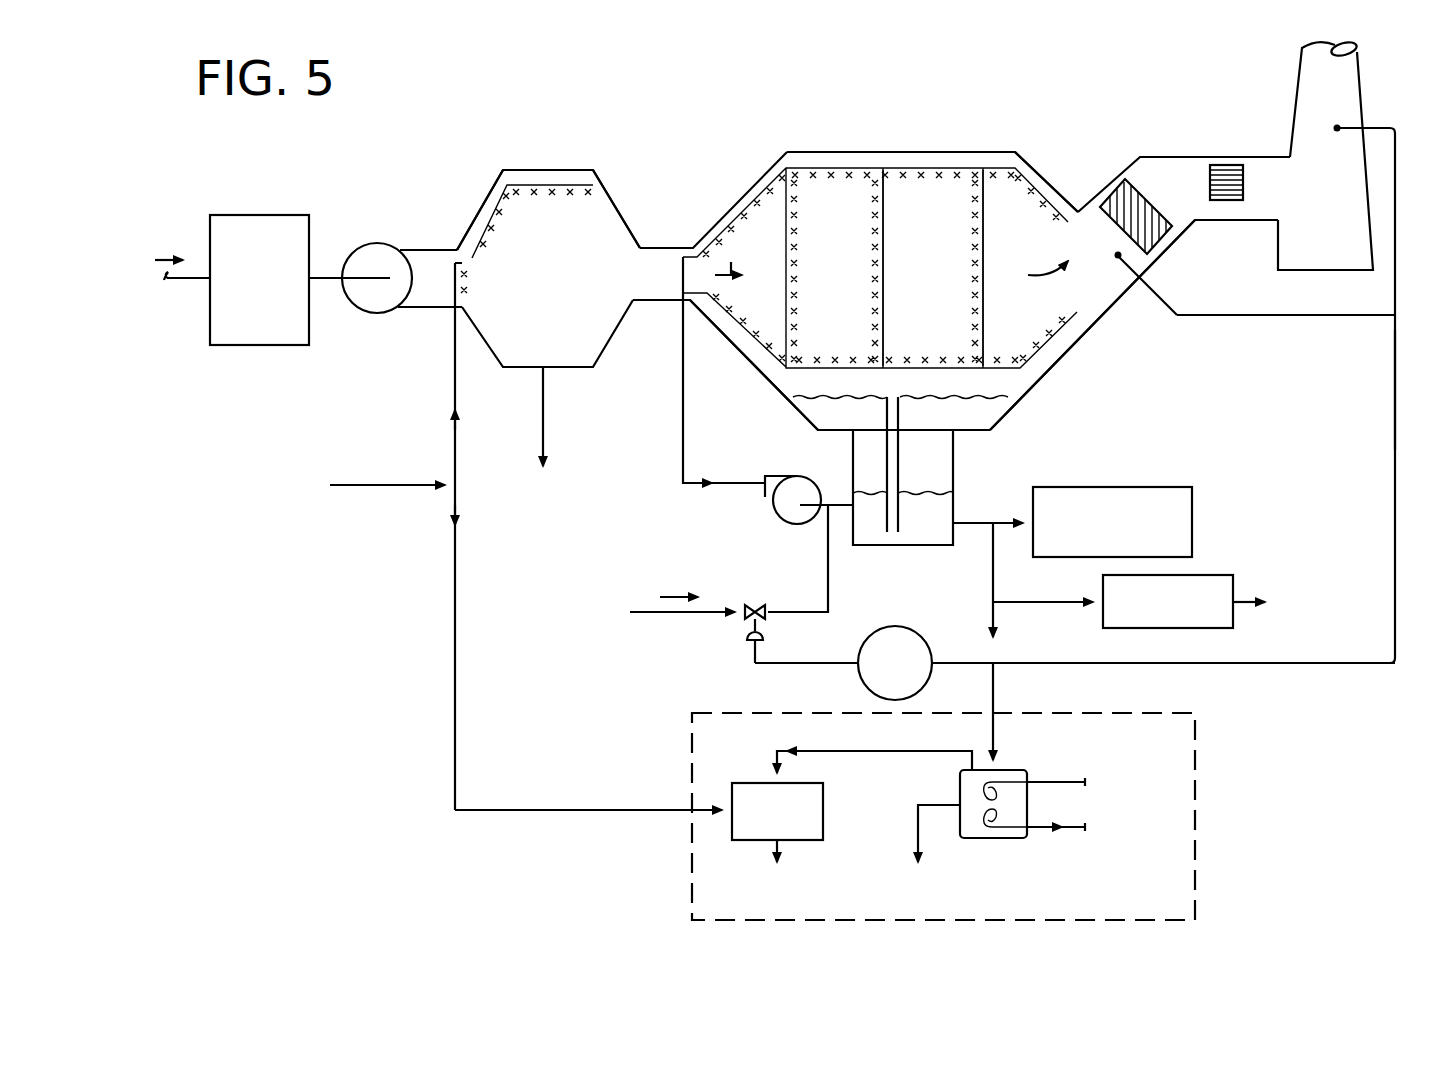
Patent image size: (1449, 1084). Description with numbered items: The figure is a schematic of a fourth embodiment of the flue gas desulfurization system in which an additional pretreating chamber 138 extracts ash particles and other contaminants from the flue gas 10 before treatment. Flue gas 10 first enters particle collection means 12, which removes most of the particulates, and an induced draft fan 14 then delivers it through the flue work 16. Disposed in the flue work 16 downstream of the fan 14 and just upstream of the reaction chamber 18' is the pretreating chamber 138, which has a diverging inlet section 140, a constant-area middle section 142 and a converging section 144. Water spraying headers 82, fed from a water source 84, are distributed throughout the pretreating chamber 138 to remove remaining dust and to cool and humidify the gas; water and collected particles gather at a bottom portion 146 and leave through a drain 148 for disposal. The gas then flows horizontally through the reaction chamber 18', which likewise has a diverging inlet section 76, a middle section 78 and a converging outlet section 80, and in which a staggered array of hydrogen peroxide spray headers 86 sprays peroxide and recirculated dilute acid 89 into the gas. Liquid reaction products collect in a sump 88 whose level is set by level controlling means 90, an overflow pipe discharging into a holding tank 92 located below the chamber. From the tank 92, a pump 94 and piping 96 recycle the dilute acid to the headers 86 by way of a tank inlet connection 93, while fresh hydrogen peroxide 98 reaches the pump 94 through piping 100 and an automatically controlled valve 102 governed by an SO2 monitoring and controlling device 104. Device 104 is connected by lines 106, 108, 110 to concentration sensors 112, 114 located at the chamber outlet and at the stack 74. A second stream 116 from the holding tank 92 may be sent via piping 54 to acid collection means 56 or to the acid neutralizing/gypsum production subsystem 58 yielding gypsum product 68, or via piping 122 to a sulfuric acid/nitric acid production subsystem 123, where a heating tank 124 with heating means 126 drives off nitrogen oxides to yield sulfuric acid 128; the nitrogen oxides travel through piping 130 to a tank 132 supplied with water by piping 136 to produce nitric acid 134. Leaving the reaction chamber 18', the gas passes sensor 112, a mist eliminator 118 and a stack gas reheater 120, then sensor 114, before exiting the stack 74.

The flue gas 10 is at (172, 258).
The particle collection means 12 is at (262, 222).
The induced draft fan 14 is at (368, 258).
The flue work 16 is at (428, 263).
The reaction chamber 18' is at (843, 139).
The piping 54 is at (1012, 522).
The acid collection means 56 is at (1130, 538).
The acid neutralizing/gypsum production subsystem 58 is at (1185, 616).
The product 68 is at (1287, 626).
The stack 74 is at (1343, 258).
The diverging inlet section 76 is at (735, 165).
The middle section 78 is at (910, 158).
The converging outlet section 80 is at (1057, 170).
The water spraying headers 82 is at (487, 240).
The water source 84 is at (389, 483).
The hydrogen peroxide spray headers 86 is at (982, 246).
The sump 88 is at (804, 419).
The dilute acid 89 is at (998, 415).
The level controlling means 90 is at (898, 405).
The holding tank 92 is at (937, 473).
The tank inlet 93 is at (841, 509).
The pump 94 is at (793, 486).
The piping 96 is at (683, 409).
The fresh hydrogen peroxide 98 is at (684, 590).
The piping 100 is at (828, 555).
The automatically controlled valve 102 is at (762, 614).
The SO2 monitoring and controlling device 104 is at (907, 637).
The line 106 is at (1395, 383).
The line 108 is at (1324, 316).
The line 110 is at (1395, 230).
The SO2 and/or NOx concentration sensor 112 is at (1116, 258).
The SO2 and/or NOx concentration sensor 114 is at (1337, 131).
The second stream 116 is at (973, 525).
The mist eliminator 118 is at (1130, 197).
The stack gas reheater 120 is at (1227, 172).
The piping 122 is at (993, 690).
The sulfuric acid/nitric acid production subsystem 123 is at (1195, 797).
The heating tank 124 is at (1007, 775).
The heating means 126 is at (1084, 804).
The sulfuric acid 128 is at (920, 848).
The piping 130 is at (803, 748).
The tank 132 is at (805, 821).
The nitric acid 134 is at (780, 848).
The piping 136 is at (519, 812).
The pretreating chamber 138 is at (597, 207).
The diverging inlet section 140 is at (475, 182).
The middle section 142 is at (541, 152).
The converging section 144 is at (640, 214).
The bottom portion 146 is at (537, 352).
The drain 148 is at (546, 423).